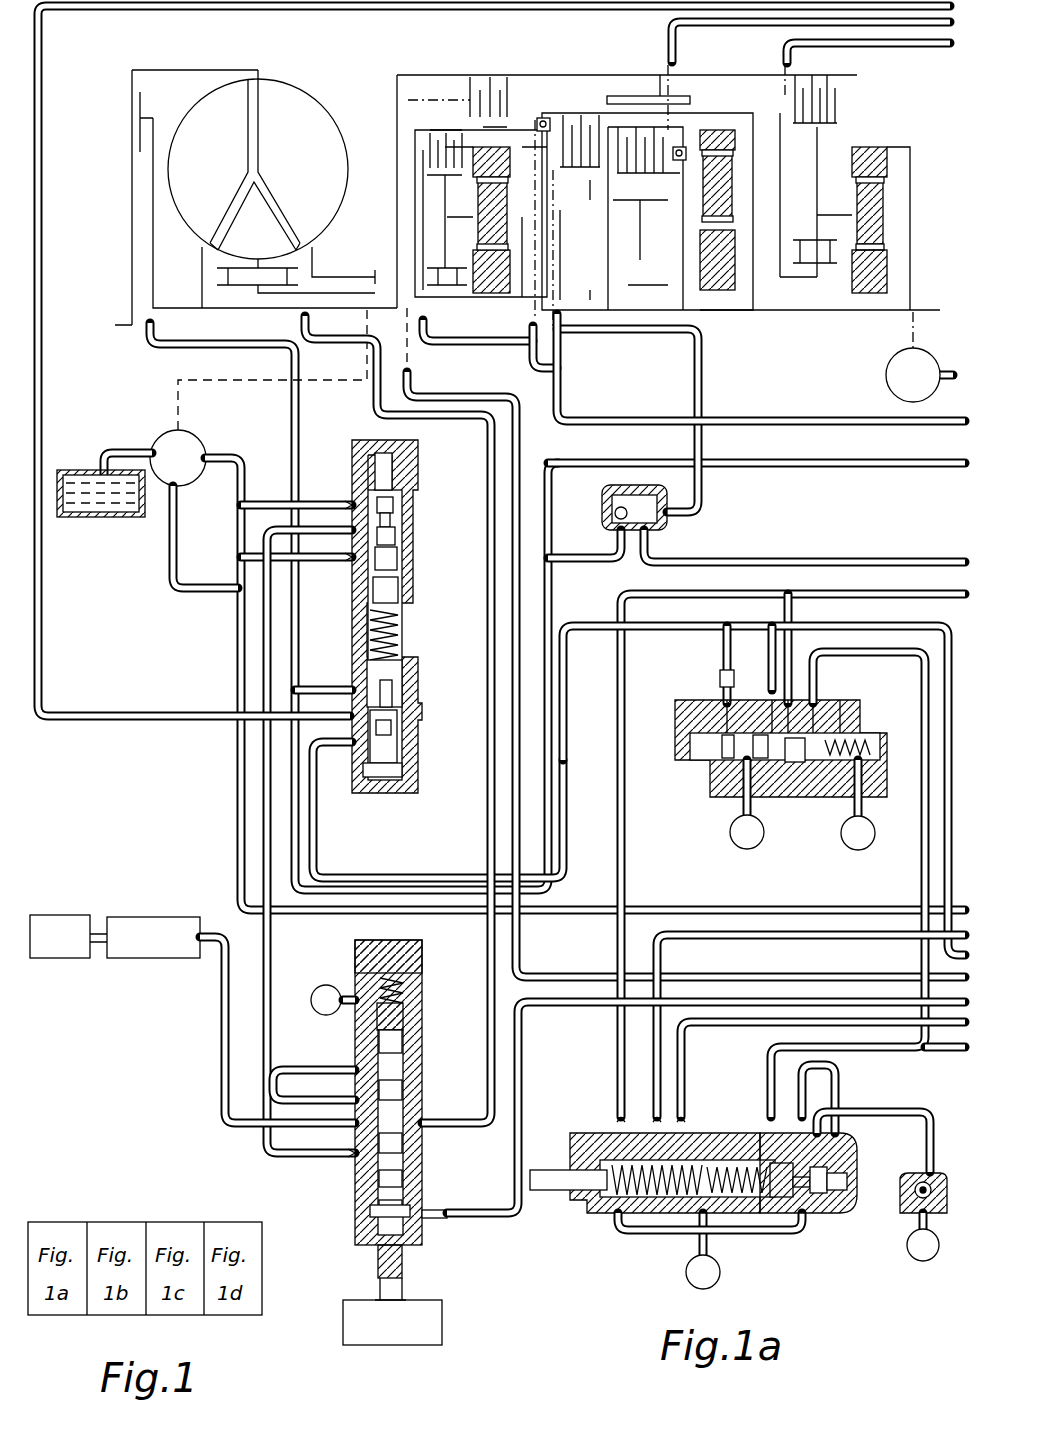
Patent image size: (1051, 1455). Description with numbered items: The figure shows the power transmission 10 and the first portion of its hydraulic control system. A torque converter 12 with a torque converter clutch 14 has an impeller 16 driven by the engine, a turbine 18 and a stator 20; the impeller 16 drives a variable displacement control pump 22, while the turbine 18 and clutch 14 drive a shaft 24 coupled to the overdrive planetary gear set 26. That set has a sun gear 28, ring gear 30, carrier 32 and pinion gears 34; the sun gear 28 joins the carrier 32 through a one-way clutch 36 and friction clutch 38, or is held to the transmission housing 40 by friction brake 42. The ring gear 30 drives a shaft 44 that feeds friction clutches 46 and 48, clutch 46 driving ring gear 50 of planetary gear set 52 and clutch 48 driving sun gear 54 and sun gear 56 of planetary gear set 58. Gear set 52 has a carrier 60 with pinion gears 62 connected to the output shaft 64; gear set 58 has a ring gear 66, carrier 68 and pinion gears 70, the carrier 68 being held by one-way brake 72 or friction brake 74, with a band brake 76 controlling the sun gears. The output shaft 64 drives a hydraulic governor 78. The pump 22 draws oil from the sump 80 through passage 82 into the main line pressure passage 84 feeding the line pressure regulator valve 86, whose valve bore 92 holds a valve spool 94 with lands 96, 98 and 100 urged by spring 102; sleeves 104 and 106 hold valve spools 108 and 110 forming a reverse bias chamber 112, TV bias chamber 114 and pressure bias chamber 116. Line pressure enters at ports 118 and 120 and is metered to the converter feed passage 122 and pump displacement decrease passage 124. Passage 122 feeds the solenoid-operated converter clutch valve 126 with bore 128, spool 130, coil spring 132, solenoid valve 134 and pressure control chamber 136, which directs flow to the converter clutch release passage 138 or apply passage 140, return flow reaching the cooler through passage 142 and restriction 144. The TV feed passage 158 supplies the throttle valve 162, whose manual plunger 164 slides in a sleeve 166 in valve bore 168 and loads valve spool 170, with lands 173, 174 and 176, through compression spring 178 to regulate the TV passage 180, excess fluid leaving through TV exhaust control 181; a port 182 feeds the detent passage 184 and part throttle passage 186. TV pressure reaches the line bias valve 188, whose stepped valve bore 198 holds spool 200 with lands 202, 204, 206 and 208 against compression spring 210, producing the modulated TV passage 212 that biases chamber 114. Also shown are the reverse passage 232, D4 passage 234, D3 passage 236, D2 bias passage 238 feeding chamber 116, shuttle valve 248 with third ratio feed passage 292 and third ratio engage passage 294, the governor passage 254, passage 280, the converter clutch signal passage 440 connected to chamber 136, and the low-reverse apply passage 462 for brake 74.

The power transmission 10 is at (642, 50).
The torque converter 12 is at (321, 82).
The torque converter clutch 14 is at (136, 100).
The impeller 16 is at (323, 148).
The turbine 18 is at (208, 115).
The stator 20 is at (230, 247).
The variable displacement control pump 22 is at (168, 428).
The shaft 24 is at (350, 310).
The overdrive planetary gear set 26 is at (457, 328).
The sun gear 28 is at (505, 282).
The ring gear 30 is at (500, 160).
The carrier 32 is at (530, 222).
The pinion gears 34 is at (478, 200).
The one-way clutch 36 is at (430, 270).
The friction clutch 38 is at (425, 135).
The transmission housing 40 is at (590, 75).
The friction brake 42 is at (500, 85).
The shaft 44 is at (578, 255).
The friction clutch 46 is at (655, 175).
The friction clutch 48 is at (580, 157).
The ring gear 50 is at (705, 135).
The planetary gear set 52 is at (676, 292).
The sun gear 54 is at (710, 270).
The sun gear 56 is at (872, 275).
The planetary gear set 58 is at (848, 164).
The carrier 60 is at (680, 240).
The pinion gears 62 is at (720, 185).
The transmission output shaft 64 is at (896, 312).
The ring gear 66 is at (872, 160).
The carrier 68 is at (830, 212).
The pinion gears 70 is at (870, 216).
The one-way brake 72 is at (798, 248).
The friction brake 74 is at (833, 115).
The friction band brake 76 is at (680, 64).
The hydraulic governor 78 is at (886, 385).
The transmission sump 80 is at (82, 503).
The passage 82 is at (100, 463).
The main line pressure passage 84 is at (222, 455).
The line pressure regulator valve 86 is at (439, 712).
The valve bore 92 is at (393, 497).
The valve spool 94 is at (400, 583).
The land 96 is at (397, 540).
The land 98 is at (395, 525).
The land 100 is at (383, 490).
The spring 102 is at (400, 630).
The sleeve 104 is at (392, 690).
The sleeve 106 is at (395, 745).
The valve spool 108 is at (400, 668).
The valve spool 110 is at (355, 738).
The reverse bias chamber 112 is at (350, 660).
The TV bias chamber 114 is at (385, 772).
The pressure bias chamber 116 is at (350, 688).
The port 118 is at (350, 500).
The port 120 is at (352, 555).
The converter feed passage 122 is at (263, 645).
The pump displacement decrease passage 124 is at (218, 585).
The solenoid-operated converter clutch valve 126 is at (432, 1168).
The valve bore 128 is at (395, 1043).
The valve spool 130 is at (405, 1018).
The coil spring 132 is at (405, 990).
The solenoid valve 134 is at (358, 1333).
The pressure control chamber 136 is at (368, 1210).
The converter clutch release passage 138 is at (298, 998).
The converter clutch apply passage 140 is at (500, 1080).
The passage 142 is at (218, 1052).
The restriction 144 is at (350, 1150).
The TV feed passage 158 is at (900, 1049).
The throttle valve 162 is at (875, 1236).
The manual plunger 164 is at (568, 1185).
The sleeve 166 is at (615, 1132).
The valve bore 168 is at (716, 1155).
The valve spool 170 is at (778, 1165).
The land 173 is at (770, 1197).
The land 174 is at (825, 1200).
The land 176 is at (847, 1178).
The compression spring 178 is at (668, 1200).
The throttle valve pressure passage 180 is at (915, 598).
The TV exhaust control 181 is at (938, 1154).
The port 182 is at (682, 1150).
The detent passage 184 is at (700, 1024).
The part throttle passage 186 is at (690, 936).
The line bias valve 188 is at (843, 828).
The stepped valve bore 198 is at (795, 626).
The valve spool 200 is at (755, 705).
The land 202 is at (722, 792).
The land 204 is at (800, 790).
The land 206 is at (795, 792).
The land 208 is at (825, 705).
The compression spring 210 is at (870, 730).
The modulated TV passage 212 is at (700, 630).
The reverse passage 232 is at (536, 358).
The D4 passage 234 is at (877, 24).
The D3 passage 236 is at (893, 426).
The D2 bias passage 238 is at (168, 722).
The shuttle valve 248 is at (596, 508).
The governor passage 254 is at (950, 372).
The control passage 280 is at (520, 470).
The third ratio feed passage 292 is at (910, 560).
The third ratio engage passage 294 is at (612, 330).
The converter clutch signal passage 440 is at (957, 1050).
The low-reverse apply passage 462 is at (934, 46).